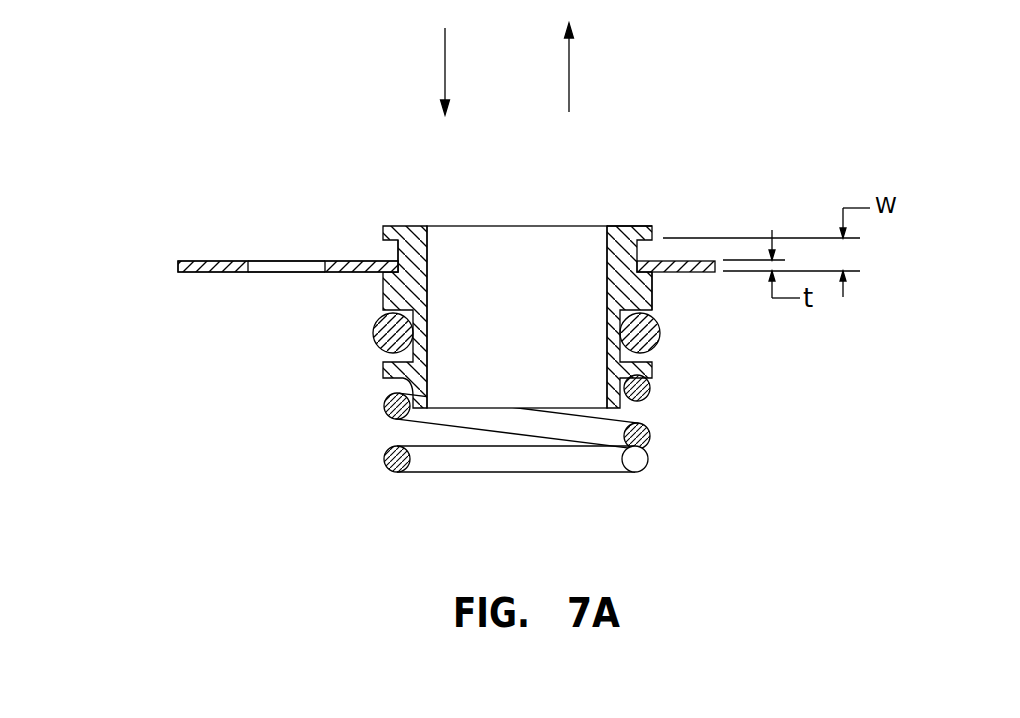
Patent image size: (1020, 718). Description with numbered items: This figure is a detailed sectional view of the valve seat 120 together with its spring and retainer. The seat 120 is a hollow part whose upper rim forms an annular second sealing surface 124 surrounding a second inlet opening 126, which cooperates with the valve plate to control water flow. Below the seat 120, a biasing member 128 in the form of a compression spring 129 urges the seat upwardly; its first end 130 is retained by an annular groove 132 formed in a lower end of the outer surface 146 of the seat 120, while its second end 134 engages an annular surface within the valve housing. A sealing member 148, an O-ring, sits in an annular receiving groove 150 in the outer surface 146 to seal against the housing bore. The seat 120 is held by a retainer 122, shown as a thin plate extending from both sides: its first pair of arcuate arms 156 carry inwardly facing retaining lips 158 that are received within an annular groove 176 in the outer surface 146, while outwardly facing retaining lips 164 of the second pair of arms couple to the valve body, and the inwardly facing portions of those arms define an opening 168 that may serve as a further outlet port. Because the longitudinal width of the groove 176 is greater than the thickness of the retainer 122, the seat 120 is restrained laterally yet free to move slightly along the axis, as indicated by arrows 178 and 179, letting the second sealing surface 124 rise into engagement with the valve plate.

The valve seat 120 is at (567, 247).
The retainer 122 is at (225, 214).
The second sealing surface 124 is at (613, 225).
The second inlet opening 126 is at (502, 270).
The biasing member 128 is at (363, 435).
The compression spring 129 is at (650, 460).
The first end 130 is at (655, 398).
The annular groove 132 is at (379, 387).
The second end 134 is at (393, 471).
The outer surface 146 is at (653, 293).
The sealing member 148 is at (660, 348).
The annular receiving groove 150 is at (381, 312).
The first pair of arcuate arms 156 is at (685, 260).
The retaining lips 158 is at (327, 262).
The retaining lips 164 is at (177, 263).
The opening 168 is at (270, 263).
The annular groove 176 is at (393, 246).
The arrow 178 is at (443, 62).
The arrow 179 is at (570, 83).